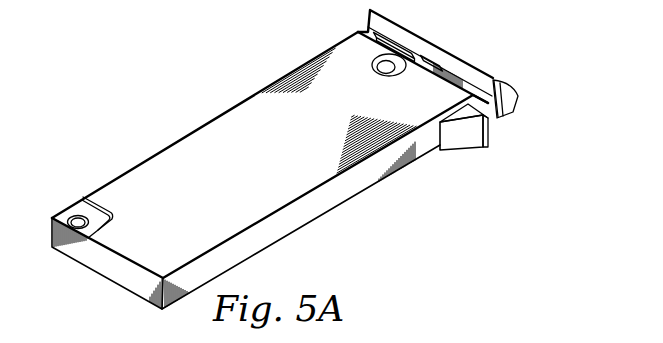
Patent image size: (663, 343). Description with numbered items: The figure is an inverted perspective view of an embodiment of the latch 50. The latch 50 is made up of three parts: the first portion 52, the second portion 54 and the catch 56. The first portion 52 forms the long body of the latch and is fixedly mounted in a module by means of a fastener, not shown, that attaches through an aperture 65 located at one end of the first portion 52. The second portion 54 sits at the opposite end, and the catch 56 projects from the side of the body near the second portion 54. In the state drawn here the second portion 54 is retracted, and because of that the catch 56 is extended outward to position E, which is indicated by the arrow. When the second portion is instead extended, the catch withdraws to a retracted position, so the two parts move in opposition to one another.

The latch 50 is at (238, 75).
The first portion 52 is at (328, 202).
The second portion 54 is at (507, 100).
The catch 56 is at (463, 140).
The aperture 65 is at (74, 214).
The extended position E is at (523, 134).